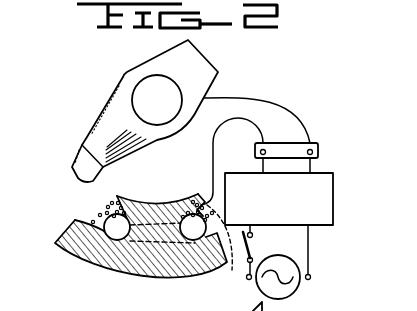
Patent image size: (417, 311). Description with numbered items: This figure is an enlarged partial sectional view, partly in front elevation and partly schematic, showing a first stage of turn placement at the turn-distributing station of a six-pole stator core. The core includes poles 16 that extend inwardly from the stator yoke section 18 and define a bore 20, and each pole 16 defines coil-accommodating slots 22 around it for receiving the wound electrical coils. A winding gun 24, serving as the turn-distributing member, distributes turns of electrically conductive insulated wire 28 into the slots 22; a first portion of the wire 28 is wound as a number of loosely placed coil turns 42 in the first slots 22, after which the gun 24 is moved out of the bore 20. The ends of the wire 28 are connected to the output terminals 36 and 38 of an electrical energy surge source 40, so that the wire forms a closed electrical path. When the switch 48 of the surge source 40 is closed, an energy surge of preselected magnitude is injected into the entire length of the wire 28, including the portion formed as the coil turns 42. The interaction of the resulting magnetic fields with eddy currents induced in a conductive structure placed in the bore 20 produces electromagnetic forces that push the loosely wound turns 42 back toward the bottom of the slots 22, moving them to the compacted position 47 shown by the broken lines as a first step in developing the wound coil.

The pole 16 is at (155, 206).
The stator yoke section 18 is at (63, 245).
The bore 20 is at (196, 199).
The coil-accommodating slots 22 is at (87, 246).
The winding gun 24 is at (118, 77).
The electrically conductive insulated wire 28 is at (111, 201).
The output terminal 36 is at (313, 143).
The output terminal 38 is at (265, 148).
The electrical energy surge source 40 is at (387, 194).
The loosely placed coil turns 42 is at (100, 208).
The compacted turn position 47 is at (218, 248).
The switch 48 is at (249, 252).